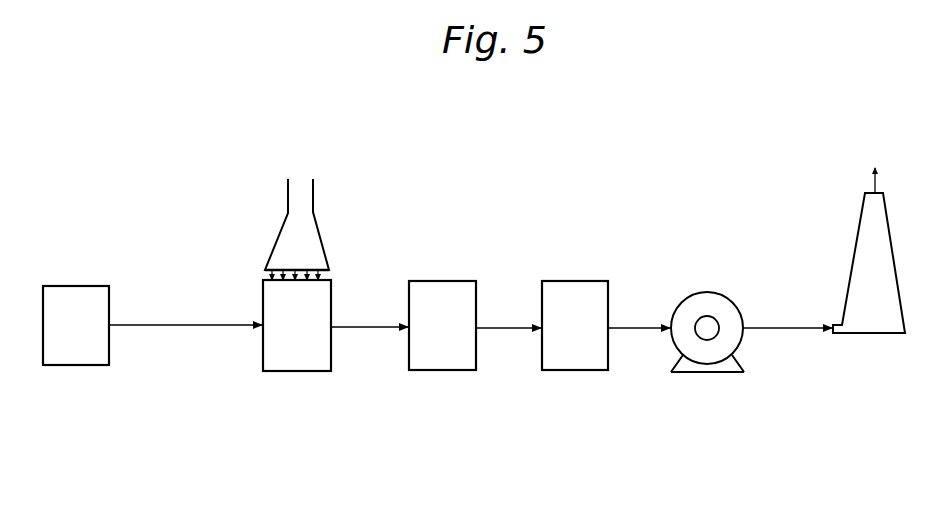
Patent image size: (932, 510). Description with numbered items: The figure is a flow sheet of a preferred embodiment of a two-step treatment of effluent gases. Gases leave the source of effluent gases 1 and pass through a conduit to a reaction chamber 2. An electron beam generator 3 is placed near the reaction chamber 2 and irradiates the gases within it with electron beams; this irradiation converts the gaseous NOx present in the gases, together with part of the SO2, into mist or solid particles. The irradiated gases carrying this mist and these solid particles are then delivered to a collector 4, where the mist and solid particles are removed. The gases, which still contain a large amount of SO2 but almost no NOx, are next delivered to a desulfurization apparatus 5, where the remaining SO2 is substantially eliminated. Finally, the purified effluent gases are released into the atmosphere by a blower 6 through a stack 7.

The source of effluent gases 1 is at (70, 365).
The reaction chamber 2 is at (282, 371).
The electron beam generator 3 is at (313, 229).
The collector 4 is at (440, 370).
The desulfurization apparatus 5 is at (578, 370).
The blower 6 is at (707, 372).
The stack 7 is at (865, 333).